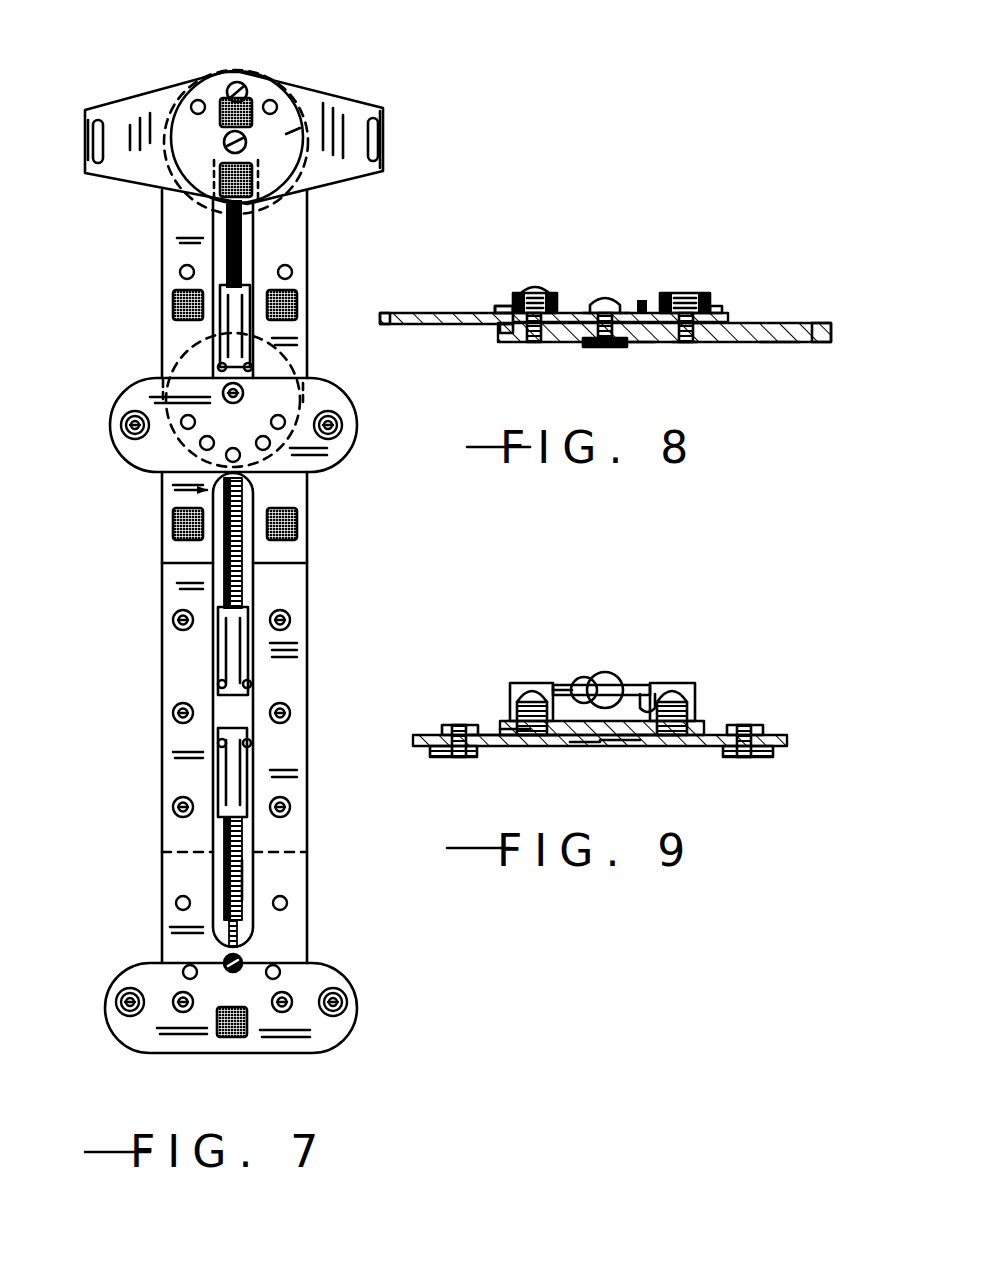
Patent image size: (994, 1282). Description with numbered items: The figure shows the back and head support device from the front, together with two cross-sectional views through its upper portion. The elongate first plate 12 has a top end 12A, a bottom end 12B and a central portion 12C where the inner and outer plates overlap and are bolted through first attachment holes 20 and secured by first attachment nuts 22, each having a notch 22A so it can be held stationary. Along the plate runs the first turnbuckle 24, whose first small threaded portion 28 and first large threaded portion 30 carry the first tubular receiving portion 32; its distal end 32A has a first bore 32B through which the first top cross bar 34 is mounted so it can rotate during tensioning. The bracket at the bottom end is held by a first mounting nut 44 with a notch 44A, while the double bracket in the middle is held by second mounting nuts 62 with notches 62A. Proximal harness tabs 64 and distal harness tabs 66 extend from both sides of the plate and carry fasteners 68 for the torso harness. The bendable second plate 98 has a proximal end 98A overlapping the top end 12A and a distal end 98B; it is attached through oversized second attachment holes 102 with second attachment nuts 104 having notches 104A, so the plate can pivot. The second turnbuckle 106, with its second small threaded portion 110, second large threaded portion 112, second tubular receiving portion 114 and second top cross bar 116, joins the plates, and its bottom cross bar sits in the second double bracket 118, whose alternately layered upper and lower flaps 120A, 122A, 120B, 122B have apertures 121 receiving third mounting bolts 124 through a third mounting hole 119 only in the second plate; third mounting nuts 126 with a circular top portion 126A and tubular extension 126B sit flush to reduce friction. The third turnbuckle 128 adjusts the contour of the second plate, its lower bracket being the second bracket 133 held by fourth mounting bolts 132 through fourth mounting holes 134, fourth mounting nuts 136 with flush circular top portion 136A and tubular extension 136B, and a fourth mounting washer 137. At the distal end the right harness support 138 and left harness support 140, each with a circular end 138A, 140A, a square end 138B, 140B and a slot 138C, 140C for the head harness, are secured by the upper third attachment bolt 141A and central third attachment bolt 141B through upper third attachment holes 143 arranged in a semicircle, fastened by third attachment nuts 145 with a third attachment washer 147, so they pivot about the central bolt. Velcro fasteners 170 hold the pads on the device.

In FIG. 7, the first plate 12 is at (186, 643).
In FIG. 9, the first plate 12 is at (712, 749).
In FIG. 7, the top end 12A is at (140, 478).
In FIG. 9, the top end 12A is at (607, 746).
In FIG. 7, the bottom end 12B is at (138, 968).
In FIG. 7, the central portion 12C is at (182, 668).
In FIG. 7, the first attachment holes 20 is at (178, 899).
In FIG. 7, the first attachment nuts 22 is at (173, 622).
In FIG. 7, the notch 22A is at (180, 614).
In FIG. 7, the first turnbuckle 24 is at (252, 876).
In FIG. 7, the first small threaded portion 28 is at (240, 932).
In FIG. 7, the first large threaded portion 30 is at (243, 847).
In FIG. 7, the first tubular receiving portion 32 is at (246, 786).
In FIG. 7, the distal end 32A is at (218, 733).
In FIG. 7, the first bore 32B is at (216, 768).
In FIG. 7, the first top cross bar 34 is at (251, 743).
In FIG. 7, the first mounting nut 44 is at (182, 1014).
In FIG. 7, the notch 44A is at (333, 1037).
In FIG. 7, the second mounting nuts 62 is at (173, 713).
In FIG. 7, the notch 62A is at (290, 712).
In FIG. 7, the proximal harness tabs 64 is at (335, 972).
In FIG. 7, the distal harness tabs 66 is at (340, 452).
In FIG. 9, the distal harness tabs 66 is at (780, 742).
In FIG. 9, the fastener 68 is at (455, 726).
In FIG. 7, the second plate 98 is at (314, 220).
In FIG. 8, the second plate 98 is at (650, 304).
In FIG. 9, the second plate 98 is at (700, 733).
In FIG. 7, the proximal end 98A is at (305, 397).
In FIG. 9, the proximal end 98A is at (633, 746).
In FIG. 7, the distal end 98B is at (300, 128).
In FIG. 8, the distal end 98B is at (627, 302).
In FIG. 7, the second attachment holes 102 is at (187, 414).
In FIG. 7, the second attachment nuts 104 is at (245, 393).
In FIG. 7, the notch 104A is at (252, 368).
In FIG. 7, the second turnbuckle 106 is at (238, 622).
In FIG. 7, the second small threaded portion 110 is at (313, 476).
In FIG. 7, the second large threaded portion 112 is at (243, 548).
In FIG. 7, the second tubular receiving portion 114 is at (250, 612).
In FIG. 7, the second top cross bar 116 is at (251, 683).
In FIG. 9, the second double bracket 118 is at (687, 693).
In FIG. 9, the third mounting hole 119 is at (580, 746).
In FIG. 9, the upper flap 120A is at (533, 687).
In FIG. 9, the lower flap 120B is at (513, 717).
In FIG. 8, the apertures 121 is at (535, 292).
In FIG. 9, the upper flap 122A is at (518, 710).
In FIG. 9, the lower flap 122B is at (510, 723).
In FIG. 9, the third mounting bolts 124 is at (607, 674).
In FIG. 9, the third mounting nuts 126 is at (560, 746).
In FIG. 9, the circular top portion 126A is at (517, 746).
In FIG. 9, the tubular extension 126B is at (487, 747).
In FIG. 7, the third turnbuckle 128 is at (248, 262).
In FIG. 9, the third turnbuckle 128 is at (587, 686).
In FIG. 8, the fourth mounting bolts 132 is at (518, 296).
In FIG. 8, the second bracket 133 is at (550, 297).
In FIG. 8, the fourth mounting holes 134 is at (503, 306).
In FIG. 8, the fourth mounting nuts 136 is at (519, 340).
In FIG. 8, the circular top portion 136A is at (672, 342).
In FIG. 8, the tubular extension 136B is at (640, 343).
In FIG. 8, the fourth mounting washer 137 is at (557, 296).
In FIG. 7, the right harness support 138 is at (140, 112).
In FIG. 8, the right harness support 138 is at (793, 344).
In FIG. 7, the circular end 138A is at (213, 85).
In FIG. 8, the circular end 138A is at (682, 343).
In FIG. 7, the square end 138B is at (100, 110).
In FIG. 8, the square end 138B is at (770, 343).
In FIG. 7, the slot 138C is at (84, 156).
In FIG. 8, the slot 138C is at (850, 306).
In FIG. 7, the left harness support 140 is at (350, 108).
In FIG. 8, the left harness support 140 is at (428, 325).
In FIG. 7, the circular end 140A is at (227, 82).
In FIG. 8, the circular end 140A is at (523, 343).
In FIG. 7, the square end 140B is at (383, 112).
In FIG. 8, the square end 140B is at (460, 325).
In FIG. 7, the slot 140C is at (386, 147).
In FIG. 8, the slot 140C is at (376, 314).
In FIG. 7, the upper third attachment bolt 141A is at (242, 82).
In FIG. 7, the central third attachment bolt 141B is at (255, 95).
In FIG. 8, the central third attachment bolt 141B is at (587, 297).
In FIG. 7, the upper third attachment holes 143 is at (207, 90).
In FIG. 8, the upper third attachment holes 143 is at (605, 348).
In FIG. 8, the third attachment nuts 145 is at (592, 348).
In FIG. 8, the third attachment washer 147 is at (640, 299).
In FIG. 7, the Velcro fasteners 170 is at (225, 100).